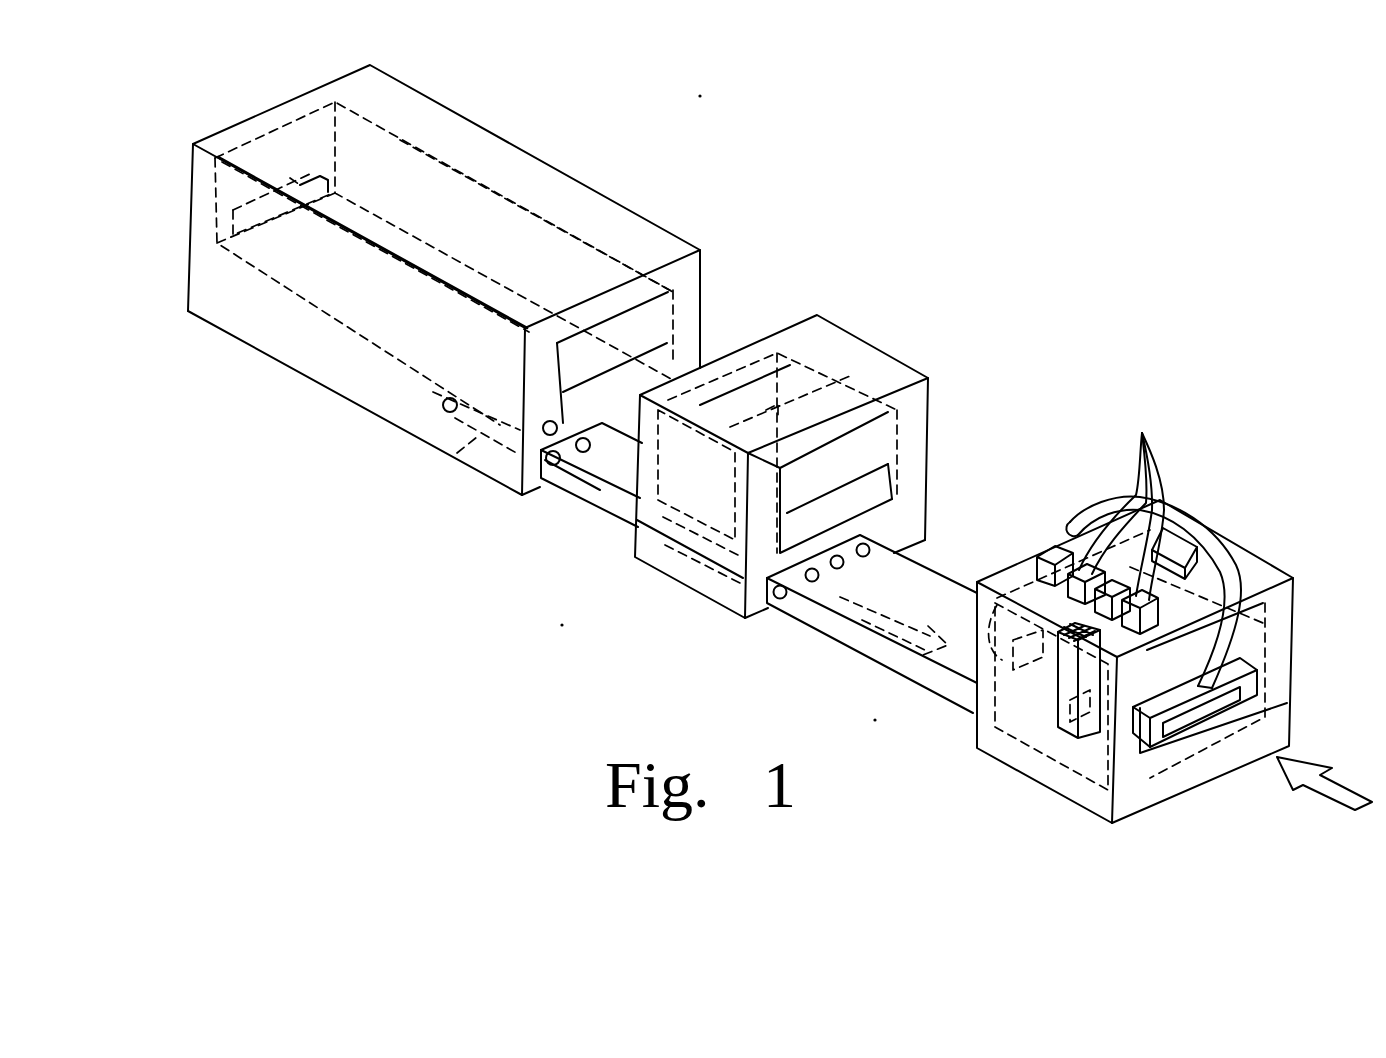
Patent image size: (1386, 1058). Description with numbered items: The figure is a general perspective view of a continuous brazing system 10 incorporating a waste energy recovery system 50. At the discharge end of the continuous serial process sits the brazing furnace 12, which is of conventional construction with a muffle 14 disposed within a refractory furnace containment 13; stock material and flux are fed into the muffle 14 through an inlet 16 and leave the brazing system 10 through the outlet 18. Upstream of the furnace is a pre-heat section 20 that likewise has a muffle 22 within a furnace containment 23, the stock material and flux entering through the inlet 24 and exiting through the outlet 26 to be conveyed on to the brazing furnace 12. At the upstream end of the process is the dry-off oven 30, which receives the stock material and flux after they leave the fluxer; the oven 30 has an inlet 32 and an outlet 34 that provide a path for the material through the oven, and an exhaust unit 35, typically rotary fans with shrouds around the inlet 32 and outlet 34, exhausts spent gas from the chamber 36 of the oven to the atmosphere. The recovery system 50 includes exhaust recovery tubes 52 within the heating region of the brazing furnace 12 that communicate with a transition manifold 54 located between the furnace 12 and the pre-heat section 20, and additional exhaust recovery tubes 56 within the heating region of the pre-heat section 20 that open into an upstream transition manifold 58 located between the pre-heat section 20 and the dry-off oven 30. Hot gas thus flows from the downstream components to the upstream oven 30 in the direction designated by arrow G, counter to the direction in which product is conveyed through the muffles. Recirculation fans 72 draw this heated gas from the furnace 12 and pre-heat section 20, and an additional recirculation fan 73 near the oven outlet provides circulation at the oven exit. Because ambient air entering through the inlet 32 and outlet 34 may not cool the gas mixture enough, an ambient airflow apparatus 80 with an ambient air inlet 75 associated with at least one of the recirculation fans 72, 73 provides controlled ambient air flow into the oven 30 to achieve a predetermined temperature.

The continuous brazing system 10 is at (952, 238).
The brazing furnace 12 is at (510, 166).
The refractory furnace containment 13 is at (257, 333).
The muffle 14 is at (612, 225).
The inlet 16 is at (700, 355).
The outlet 18 is at (323, 173).
The pre-heat section 20 is at (888, 373).
The muffle 22 is at (928, 418).
The furnace containment 23 is at (840, 338).
The inlet 24 is at (890, 498).
The outlet 26 is at (768, 420).
The dry-off oven 30 is at (1258, 573).
The inlet 32 is at (1252, 727).
The outlet 34 is at (1000, 576).
The exhaust unit 35 is at (1178, 543).
The chamber 36 is at (1180, 722).
The recovery system 50 is at (572, 499).
The exhaust recovery tubes 52 is at (480, 437).
The transition manifold 54 is at (612, 508).
The exhaust recovery tubes 56 is at (690, 562).
The upstream transition manifold 58 is at (828, 620).
The recirculation fans 72 is at (1153, 547).
The recirculation fan 73 is at (1056, 546).
The ambient air inlet 75 is at (1073, 750).
The ambient airflow apparatus 80 is at (1058, 720).
The gas flow direction arrow G is at (865, 622).